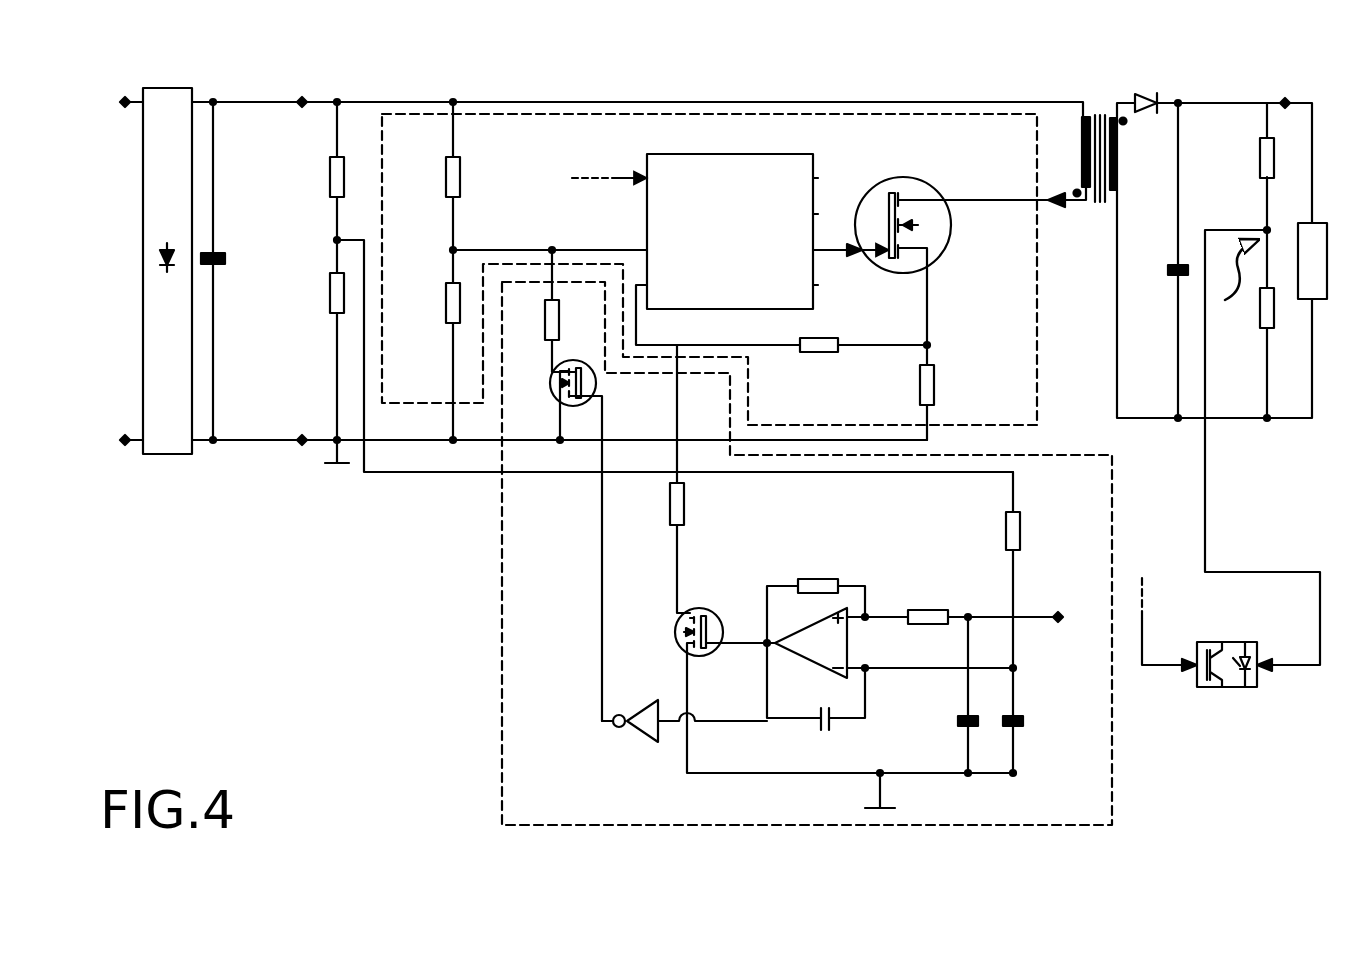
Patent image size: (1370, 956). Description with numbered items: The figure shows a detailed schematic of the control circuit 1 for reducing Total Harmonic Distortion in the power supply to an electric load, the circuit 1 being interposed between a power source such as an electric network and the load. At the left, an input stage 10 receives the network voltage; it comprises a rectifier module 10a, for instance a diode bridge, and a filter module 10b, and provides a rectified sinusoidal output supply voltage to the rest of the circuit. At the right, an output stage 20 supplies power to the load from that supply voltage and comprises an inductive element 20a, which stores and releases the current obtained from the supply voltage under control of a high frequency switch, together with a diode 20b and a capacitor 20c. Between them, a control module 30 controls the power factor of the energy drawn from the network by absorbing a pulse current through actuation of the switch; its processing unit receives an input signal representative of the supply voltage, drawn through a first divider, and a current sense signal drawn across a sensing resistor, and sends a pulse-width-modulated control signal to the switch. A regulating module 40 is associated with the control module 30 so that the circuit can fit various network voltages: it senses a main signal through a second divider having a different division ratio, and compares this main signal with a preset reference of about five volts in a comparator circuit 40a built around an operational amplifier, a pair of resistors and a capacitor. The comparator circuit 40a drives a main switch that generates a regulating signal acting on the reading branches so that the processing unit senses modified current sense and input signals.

The control circuit 1 is at (298, 572).
The input stage 10 is at (558, 320).
The rectifier module 10a is at (168, 460).
The filter module 10b is at (222, 272).
The output stage 20 is at (1222, 377).
The inductive element 20a is at (1090, 158).
The diode 20b is at (1147, 90).
The capacitor 20c is at (1171, 260).
The control module 30 is at (470, 242).
The regulating module 40 is at (765, 650).
The comparator circuit 40a is at (811, 643).